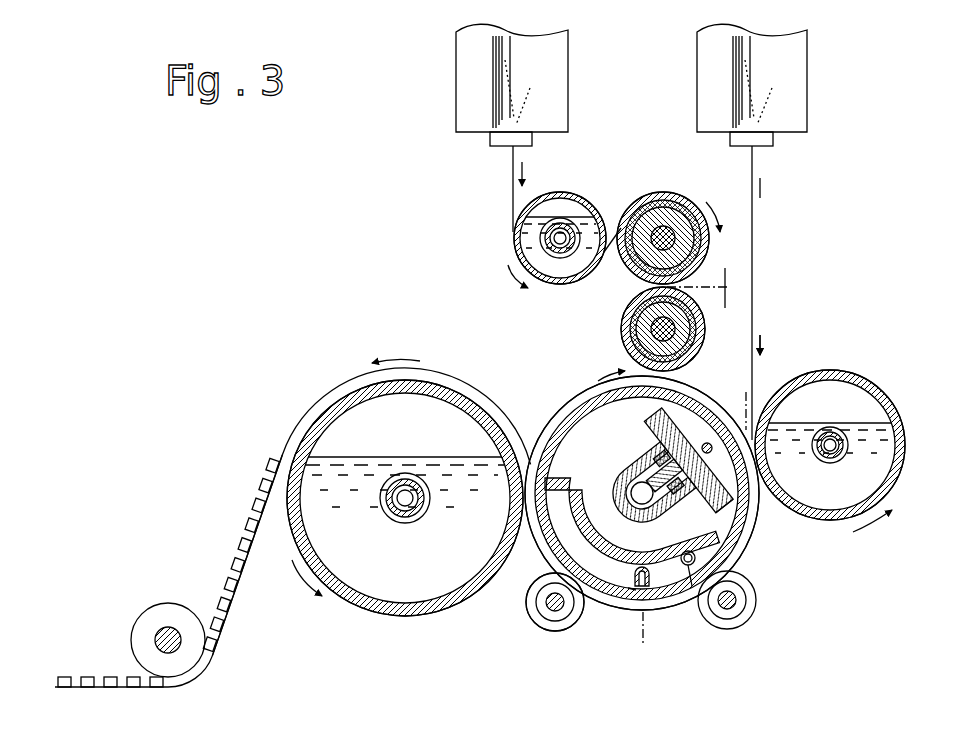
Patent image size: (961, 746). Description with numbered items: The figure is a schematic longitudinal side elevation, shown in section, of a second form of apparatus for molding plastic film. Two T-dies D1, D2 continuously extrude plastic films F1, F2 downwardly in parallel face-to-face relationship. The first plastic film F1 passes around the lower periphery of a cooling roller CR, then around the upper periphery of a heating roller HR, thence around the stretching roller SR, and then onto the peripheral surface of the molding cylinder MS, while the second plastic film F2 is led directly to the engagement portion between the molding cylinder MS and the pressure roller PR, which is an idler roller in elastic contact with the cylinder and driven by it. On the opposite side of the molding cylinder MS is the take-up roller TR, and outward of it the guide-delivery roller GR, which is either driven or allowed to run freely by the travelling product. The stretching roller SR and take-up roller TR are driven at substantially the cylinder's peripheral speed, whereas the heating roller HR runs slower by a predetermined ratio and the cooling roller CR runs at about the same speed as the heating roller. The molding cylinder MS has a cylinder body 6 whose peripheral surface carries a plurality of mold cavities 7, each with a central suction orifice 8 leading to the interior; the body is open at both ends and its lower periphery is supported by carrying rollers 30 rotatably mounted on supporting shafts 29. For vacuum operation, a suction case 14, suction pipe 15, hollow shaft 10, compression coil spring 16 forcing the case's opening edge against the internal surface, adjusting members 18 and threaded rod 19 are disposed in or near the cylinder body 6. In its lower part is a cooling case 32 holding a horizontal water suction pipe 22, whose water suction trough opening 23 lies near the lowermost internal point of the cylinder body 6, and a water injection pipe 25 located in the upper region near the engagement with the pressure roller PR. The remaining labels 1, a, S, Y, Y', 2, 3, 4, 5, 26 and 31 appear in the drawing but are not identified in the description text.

The T-die D1 is at (568, 78).
The T-die D2 is at (808, 78).
The plastic film F1 is at (512, 190).
The plastic film F2 is at (242, 594).
The toothed belt 1 is at (438, 378).
The belt tooth a is at (250, 535).
The guide-delivery roller GR is at (157, 604).
The take-up roller TR is at (340, 608).
The cooling roller CR is at (567, 191).
The pressure roller PR is at (832, 371).
The heating roller HR is at (622, 268).
The stretching roller SR is at (700, 351).
The molding cylinder MS is at (540, 392).
The splice line S is at (706, 288).
The axis Y is at (742, 399).
The axis Y prime Y' is at (649, 641).
The roller shell 2 is at (420, 614).
The roller hub 3 is at (400, 519).
The treating liquid 4 is at (473, 552).
The roller 5 is at (672, 210).
The cylinder body 6 is at (672, 610).
The mold cavities 7 is at (578, 402).
The central suction orifice 8 is at (535, 572).
The hollow shaft 10 is at (640, 505).
The suction case 14 is at (745, 535).
The suction pipe 15 is at (663, 442).
The compression coil spring 16 is at (648, 460).
The adjusting members 18 is at (740, 498).
The threaded rod 19 is at (707, 443).
The water suction pipe 22 is at (633, 576).
The water suction trough opening 23 is at (630, 600).
The water injection pipe 25 is at (700, 560).
The pin stem 26 is at (690, 588).
The supporting shafts 29 is at (552, 606).
The carrying rollers 30 is at (553, 620).
The roller outer ring 31 is at (570, 630).
The cooling case 32 is at (566, 478).